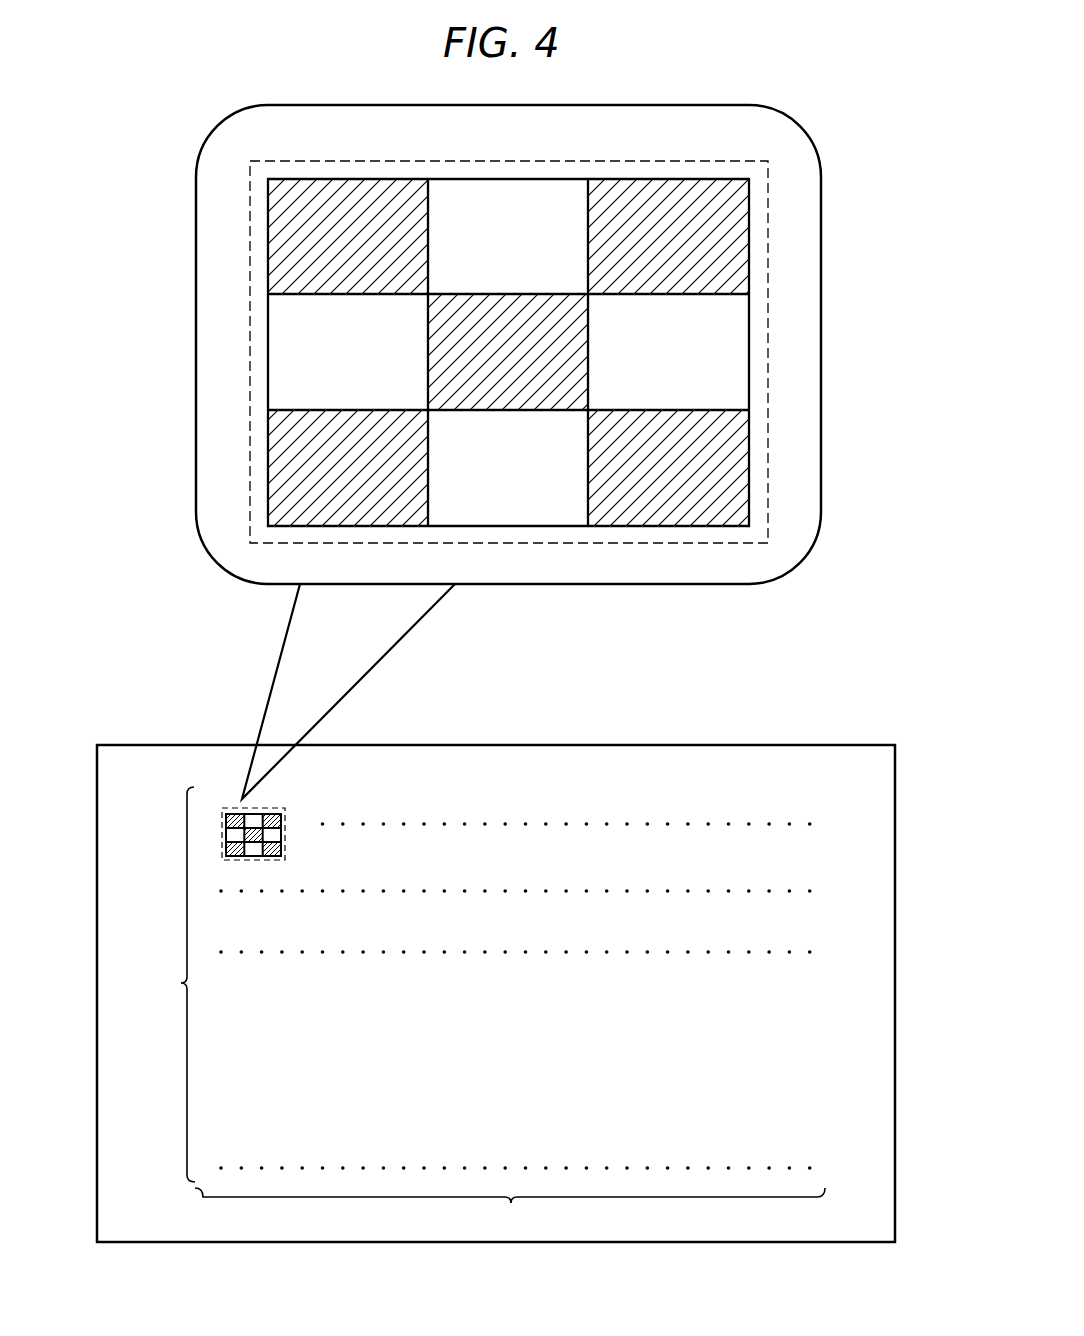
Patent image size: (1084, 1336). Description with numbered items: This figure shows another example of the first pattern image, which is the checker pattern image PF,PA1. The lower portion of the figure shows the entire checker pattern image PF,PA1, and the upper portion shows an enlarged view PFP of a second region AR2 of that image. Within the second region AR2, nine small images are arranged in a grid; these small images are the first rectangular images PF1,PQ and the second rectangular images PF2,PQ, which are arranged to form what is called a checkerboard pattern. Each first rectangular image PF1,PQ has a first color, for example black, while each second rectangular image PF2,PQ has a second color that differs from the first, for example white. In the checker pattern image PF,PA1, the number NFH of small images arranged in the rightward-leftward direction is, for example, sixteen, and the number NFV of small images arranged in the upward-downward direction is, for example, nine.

The first rectangular image (small image) PF1,PQ is at (313, 179).
The second rectangular image (small image) PF2,PQ is at (482, 179).
The second region AR2 is at (768, 261).
The enlarged view PFP is at (821, 395).
The checker pattern image (first pattern image) PF,PA1 is at (738, 745).
The number of small images arranged in the upward-downward direction NFV is at (160, 984).
The number of small images arranged in the rightward-leftward direction NFH is at (510, 1211).